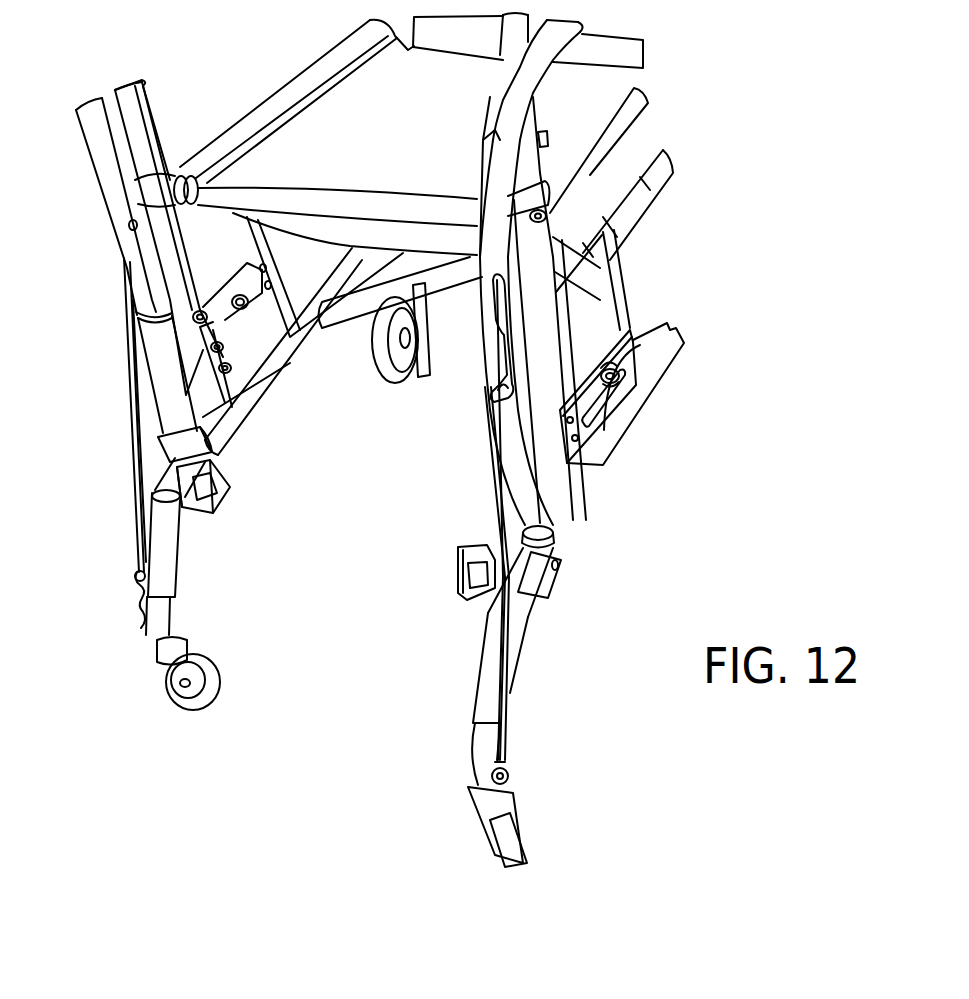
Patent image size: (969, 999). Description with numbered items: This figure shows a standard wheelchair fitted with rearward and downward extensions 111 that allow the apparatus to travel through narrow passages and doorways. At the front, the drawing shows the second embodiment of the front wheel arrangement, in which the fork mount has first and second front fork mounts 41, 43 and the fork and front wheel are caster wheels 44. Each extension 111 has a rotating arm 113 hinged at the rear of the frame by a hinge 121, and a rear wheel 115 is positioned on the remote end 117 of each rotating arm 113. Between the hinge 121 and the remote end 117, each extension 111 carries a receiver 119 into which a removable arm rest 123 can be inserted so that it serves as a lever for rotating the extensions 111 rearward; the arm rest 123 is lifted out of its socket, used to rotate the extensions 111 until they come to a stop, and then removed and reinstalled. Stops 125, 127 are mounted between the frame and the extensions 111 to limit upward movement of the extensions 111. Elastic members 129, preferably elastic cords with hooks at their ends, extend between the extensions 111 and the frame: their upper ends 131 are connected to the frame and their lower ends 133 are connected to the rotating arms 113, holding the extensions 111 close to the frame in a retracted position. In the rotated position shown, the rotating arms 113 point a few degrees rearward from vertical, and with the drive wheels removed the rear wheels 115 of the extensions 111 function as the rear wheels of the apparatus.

The first front fork mount 41 is at (420, 355).
The second front fork mount 43 is at (360, 327).
The caster wheel 44 is at (385, 380).
The extension 111 is at (182, 578).
The rotating arm 113 is at (180, 550).
The rear wheel 115 is at (188, 705).
The remote end 117 is at (158, 645).
The receiver 119 is at (222, 495).
The hinge 121 is at (163, 455).
The arm rest 123 is at (102, 162).
The stop 125 is at (213, 457).
The stop 127 is at (553, 563).
The elastic member 129 is at (128, 390).
The upper end 131 is at (128, 285).
The lower end 133 is at (135, 577).